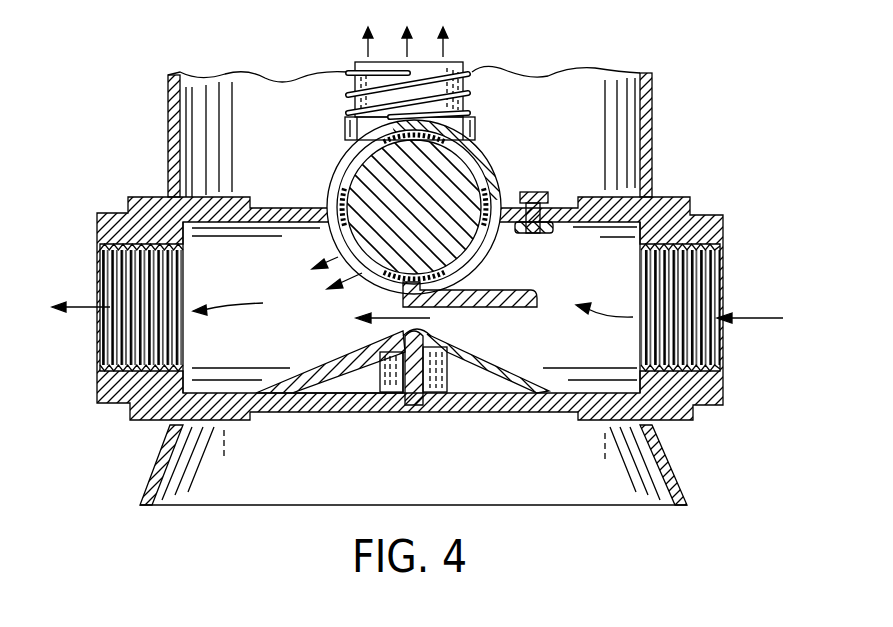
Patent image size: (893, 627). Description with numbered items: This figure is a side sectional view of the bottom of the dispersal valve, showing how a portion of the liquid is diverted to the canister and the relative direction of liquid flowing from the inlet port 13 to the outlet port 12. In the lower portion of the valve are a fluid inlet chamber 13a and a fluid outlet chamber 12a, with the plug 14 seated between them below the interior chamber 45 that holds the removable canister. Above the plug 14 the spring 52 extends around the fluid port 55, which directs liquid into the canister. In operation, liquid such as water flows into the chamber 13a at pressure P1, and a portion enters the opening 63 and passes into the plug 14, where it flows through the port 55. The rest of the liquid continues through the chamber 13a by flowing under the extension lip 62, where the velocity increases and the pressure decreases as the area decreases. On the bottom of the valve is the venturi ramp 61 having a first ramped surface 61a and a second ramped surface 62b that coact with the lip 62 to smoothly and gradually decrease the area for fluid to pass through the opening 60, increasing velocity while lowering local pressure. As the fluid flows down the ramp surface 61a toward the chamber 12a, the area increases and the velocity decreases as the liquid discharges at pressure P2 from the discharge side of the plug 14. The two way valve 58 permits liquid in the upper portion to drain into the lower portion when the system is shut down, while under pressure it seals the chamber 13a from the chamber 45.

The outlet port 12 is at (105, 333).
The inlet port 13 is at (717, 283).
The fluid outlet chamber 12a is at (268, 284).
The fluid inlet chamber 13a is at (618, 277).
The plug 14 is at (362, 183).
The interior chamber 45 is at (523, 125).
The spring 52 is at (343, 71).
The fluid port 55 is at (452, 63).
The two way valve 58 is at (528, 193).
The opening 60 is at (447, 350).
The venturi ramp 61 is at (360, 386).
The first ramped surface 61a is at (333, 360).
The extension lip 62 is at (470, 308).
The second ramped surface 62b is at (520, 372).
The opening 63 is at (472, 277).
The inlet pressure P1 is at (588, 318).
The outlet pressure P2 is at (331, 286).